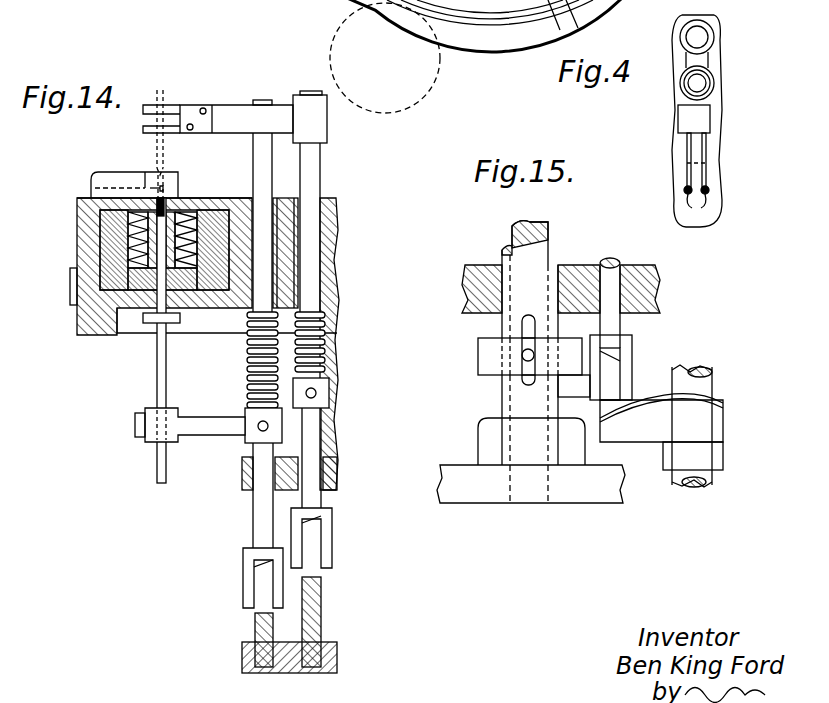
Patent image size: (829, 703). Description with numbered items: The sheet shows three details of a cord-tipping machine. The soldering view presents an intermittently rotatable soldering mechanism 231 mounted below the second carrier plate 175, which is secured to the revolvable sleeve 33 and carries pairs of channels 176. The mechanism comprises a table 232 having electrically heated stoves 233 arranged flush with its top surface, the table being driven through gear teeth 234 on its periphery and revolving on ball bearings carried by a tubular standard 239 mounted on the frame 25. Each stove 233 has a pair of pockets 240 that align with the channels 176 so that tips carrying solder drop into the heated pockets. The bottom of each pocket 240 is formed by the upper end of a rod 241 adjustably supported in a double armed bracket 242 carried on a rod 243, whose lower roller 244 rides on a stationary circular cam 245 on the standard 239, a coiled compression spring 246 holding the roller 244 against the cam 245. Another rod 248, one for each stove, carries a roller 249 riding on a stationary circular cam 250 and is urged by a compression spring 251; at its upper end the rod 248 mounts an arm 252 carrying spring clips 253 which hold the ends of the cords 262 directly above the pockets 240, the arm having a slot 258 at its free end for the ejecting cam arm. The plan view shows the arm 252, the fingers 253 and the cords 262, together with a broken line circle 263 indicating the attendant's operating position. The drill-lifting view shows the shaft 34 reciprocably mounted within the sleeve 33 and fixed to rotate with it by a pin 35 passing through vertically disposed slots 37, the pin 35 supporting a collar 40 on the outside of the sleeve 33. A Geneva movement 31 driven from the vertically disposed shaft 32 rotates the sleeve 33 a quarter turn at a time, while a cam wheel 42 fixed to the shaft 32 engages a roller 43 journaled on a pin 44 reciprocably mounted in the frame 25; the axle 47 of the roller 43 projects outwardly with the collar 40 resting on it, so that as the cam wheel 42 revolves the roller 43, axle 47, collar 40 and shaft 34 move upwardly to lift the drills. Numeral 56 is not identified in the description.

In FIG. 14, the soldering mechanism 231 is at (76, 190).
In FIG. 4, the soldering mechanism 231 is at (755, 180).
In FIG. 14, the table 232 is at (124, 198).
In FIG. 4, the table 232 is at (714, 100).
In FIG. 14, the electrically heated stove 233 is at (112, 232).
In FIG. 14, the gear teeth 234 is at (72, 272).
In FIG. 14, the second carrier plate 175 is at (106, 172).
In FIG. 14, the channels 176 is at (167, 186).
In FIG. 14, the rod 56 is at (268, 117).
In FIG. 14, the slot 258 is at (171, 116).
In FIG. 14, the cords 262 is at (165, 154).
In FIG. 4, the cords 262 is at (570, 28).
In FIG. 4, the broken line circle 263 is at (345, 15).
In FIG. 14, the pockets 240 is at (253, 117).
In FIG. 14, the arm 252 is at (245, 122).
In FIG. 4, the arm 252 is at (698, 128).
In FIG. 14, the spring clip 253 is at (177, 100).
In FIG. 4, the spring clip 253 is at (687, 170).
In FIG. 14, the rod 243 is at (265, 188).
In FIG. 4, the rod 243 is at (700, 83).
In FIG. 14, the rod 248 is at (310, 195).
In FIG. 4, the rod 248 is at (697, 37).
In FIG. 14, the rod 241 is at (158, 360).
In FIG. 14, the double armed bracket 242 is at (145, 426).
In FIG. 14, the coiled compression spring 246 is at (250, 390).
In FIG. 14, the compression spring 251 is at (323, 334).
In FIG. 14, the tubular standard 239 is at (333, 656).
In FIG. 14, the roller 244 is at (262, 584).
In FIG. 14, the stationary circular cam 245 is at (263, 613).
In FIG. 14, the roller 249 is at (312, 556).
In FIG. 14, the stationary circular cam 250 is at (318, 578).
In FIG. 15, the base or frame 25 is at (662, 283).
In FIG. 15, the revolvable sleeve 33 is at (506, 259).
In FIG. 15, the shaft 34 is at (524, 229).
In FIG. 15, the slots 37 is at (525, 331).
In FIG. 15, the collar 40 is at (498, 373).
In FIG. 15, the pin 35 is at (522, 357).
In FIG. 15, the pin 44 is at (607, 262).
In FIG. 15, the roller 43 is at (612, 372).
In FIG. 15, the axle 47 is at (576, 388).
In FIG. 15, the cam wheel 42 is at (700, 420).
In FIG. 15, the vertically disposed shaft 32 is at (696, 369).
In FIG. 15, the Geneva movement 31 is at (446, 453).